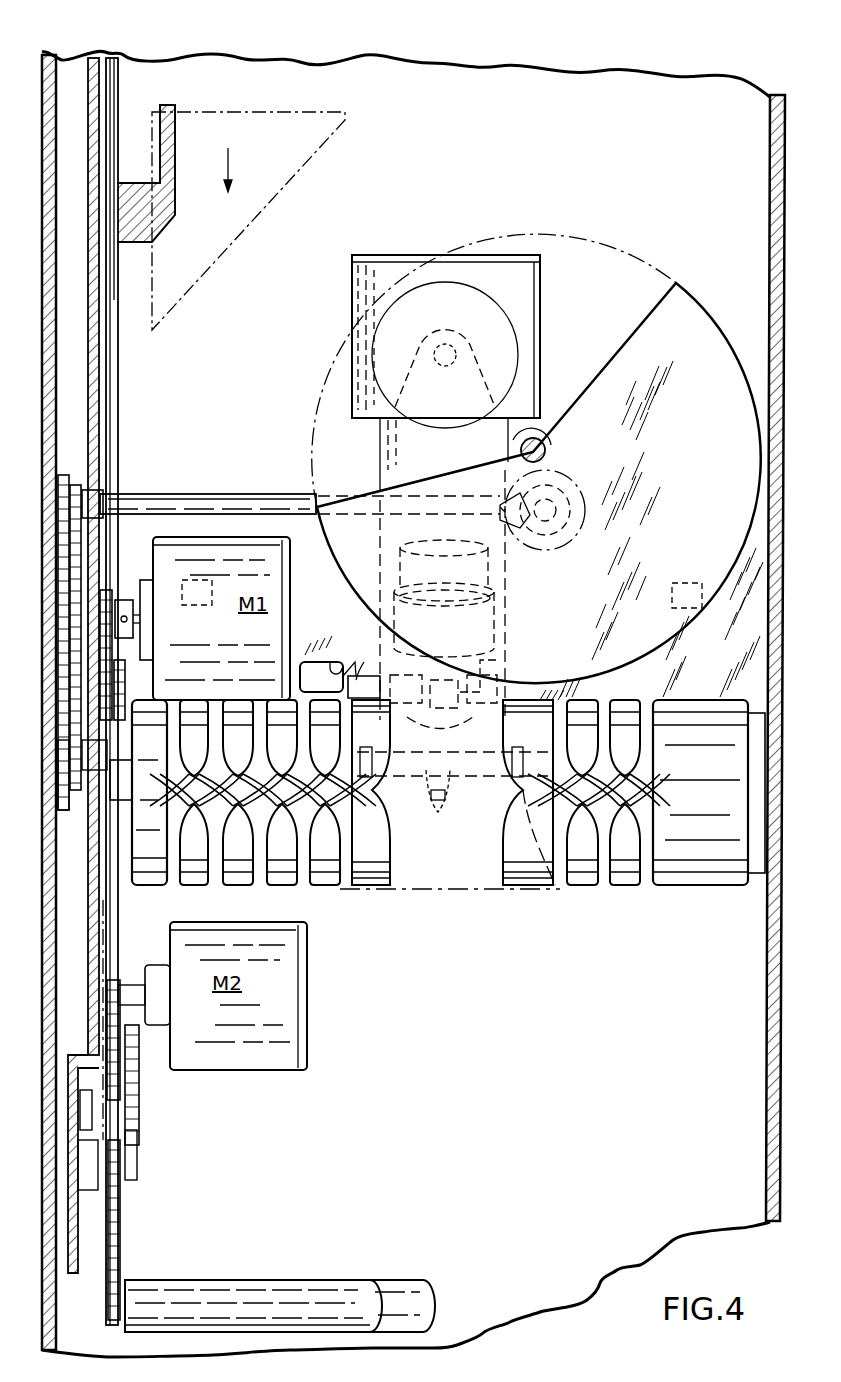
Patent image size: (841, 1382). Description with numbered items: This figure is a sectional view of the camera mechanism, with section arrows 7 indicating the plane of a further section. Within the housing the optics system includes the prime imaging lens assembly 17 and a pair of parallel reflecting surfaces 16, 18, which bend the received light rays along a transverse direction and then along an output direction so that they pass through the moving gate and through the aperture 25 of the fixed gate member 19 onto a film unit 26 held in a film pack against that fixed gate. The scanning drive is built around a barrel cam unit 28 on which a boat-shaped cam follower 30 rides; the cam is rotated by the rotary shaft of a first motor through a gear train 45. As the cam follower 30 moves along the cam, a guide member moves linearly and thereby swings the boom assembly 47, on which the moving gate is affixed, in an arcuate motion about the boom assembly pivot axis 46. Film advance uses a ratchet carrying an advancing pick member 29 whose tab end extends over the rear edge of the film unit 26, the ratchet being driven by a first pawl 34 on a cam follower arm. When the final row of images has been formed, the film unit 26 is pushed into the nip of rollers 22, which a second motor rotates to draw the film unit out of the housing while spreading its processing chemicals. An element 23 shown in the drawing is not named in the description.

The section line 7- 7 is at (117, 35).
The reflecting surface 16 is at (465, 341).
The prime imaging lens assembly 17 is at (503, 608).
The reflecting surface 18 is at (500, 660).
The fixed gate member 19 is at (340, 656).
The rollers 22 is at (268, 1270).
The sector disc 23 is at (690, 300).
The aperture 25 is at (200, 605).
The film unit 26 is at (234, 110).
The barrel cam unit 28 is at (530, 890).
The advancing pick member 29 is at (173, 137).
The cam follower 30 is at (428, 804).
The first pawl 34 is at (546, 448).
The gear train 45 is at (128, 683).
The boom assembly pivot axis 46 is at (445, 355).
The boom assembly 47 is at (378, 464).